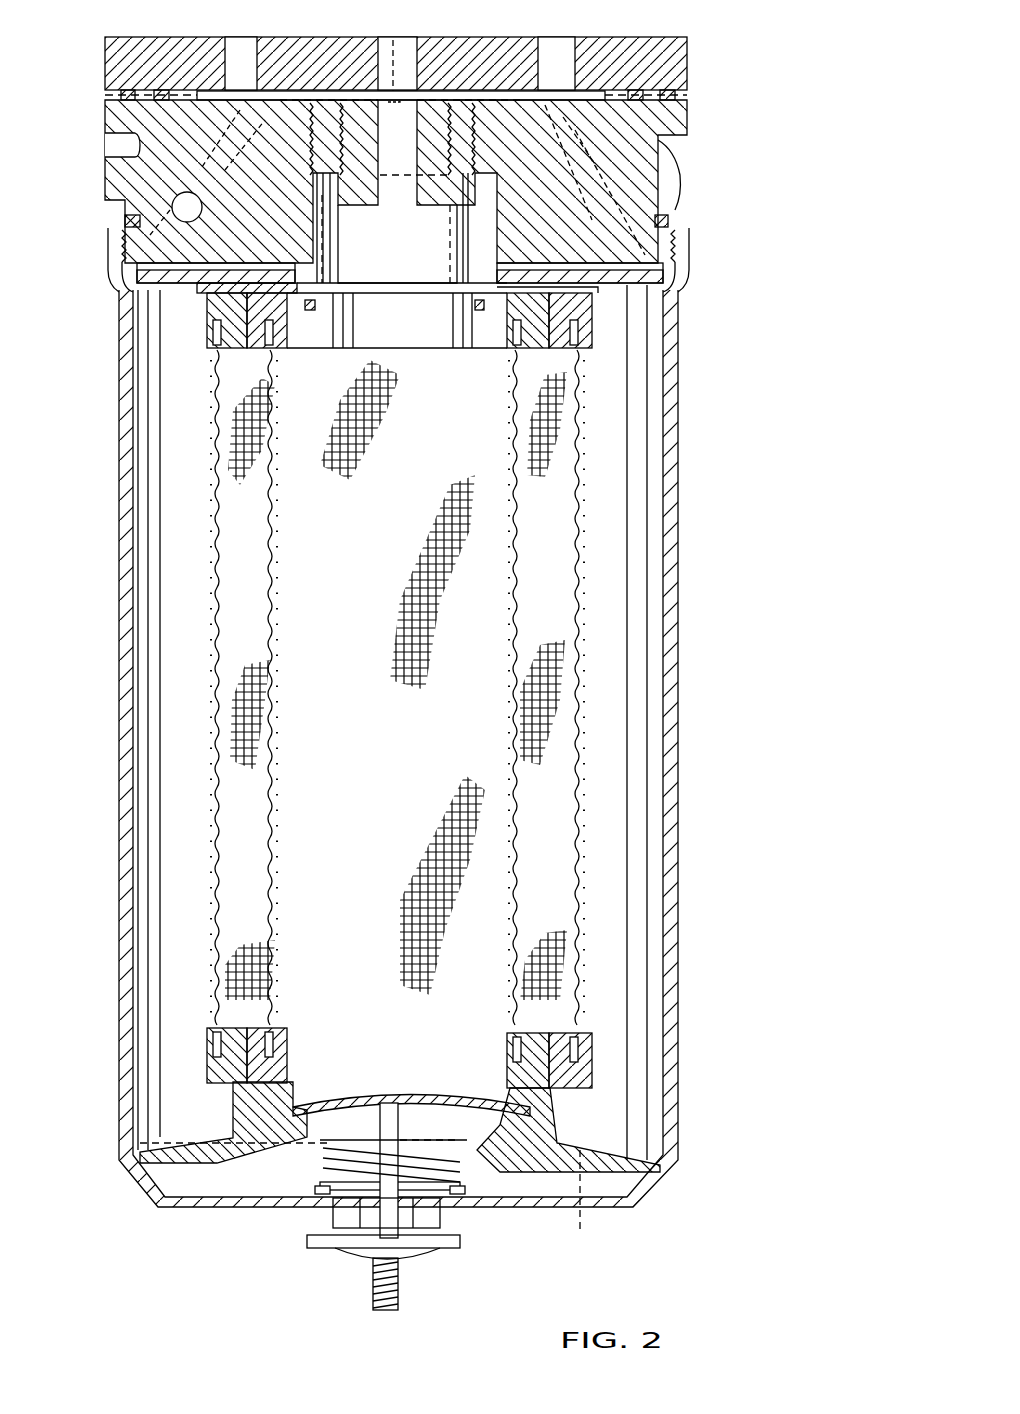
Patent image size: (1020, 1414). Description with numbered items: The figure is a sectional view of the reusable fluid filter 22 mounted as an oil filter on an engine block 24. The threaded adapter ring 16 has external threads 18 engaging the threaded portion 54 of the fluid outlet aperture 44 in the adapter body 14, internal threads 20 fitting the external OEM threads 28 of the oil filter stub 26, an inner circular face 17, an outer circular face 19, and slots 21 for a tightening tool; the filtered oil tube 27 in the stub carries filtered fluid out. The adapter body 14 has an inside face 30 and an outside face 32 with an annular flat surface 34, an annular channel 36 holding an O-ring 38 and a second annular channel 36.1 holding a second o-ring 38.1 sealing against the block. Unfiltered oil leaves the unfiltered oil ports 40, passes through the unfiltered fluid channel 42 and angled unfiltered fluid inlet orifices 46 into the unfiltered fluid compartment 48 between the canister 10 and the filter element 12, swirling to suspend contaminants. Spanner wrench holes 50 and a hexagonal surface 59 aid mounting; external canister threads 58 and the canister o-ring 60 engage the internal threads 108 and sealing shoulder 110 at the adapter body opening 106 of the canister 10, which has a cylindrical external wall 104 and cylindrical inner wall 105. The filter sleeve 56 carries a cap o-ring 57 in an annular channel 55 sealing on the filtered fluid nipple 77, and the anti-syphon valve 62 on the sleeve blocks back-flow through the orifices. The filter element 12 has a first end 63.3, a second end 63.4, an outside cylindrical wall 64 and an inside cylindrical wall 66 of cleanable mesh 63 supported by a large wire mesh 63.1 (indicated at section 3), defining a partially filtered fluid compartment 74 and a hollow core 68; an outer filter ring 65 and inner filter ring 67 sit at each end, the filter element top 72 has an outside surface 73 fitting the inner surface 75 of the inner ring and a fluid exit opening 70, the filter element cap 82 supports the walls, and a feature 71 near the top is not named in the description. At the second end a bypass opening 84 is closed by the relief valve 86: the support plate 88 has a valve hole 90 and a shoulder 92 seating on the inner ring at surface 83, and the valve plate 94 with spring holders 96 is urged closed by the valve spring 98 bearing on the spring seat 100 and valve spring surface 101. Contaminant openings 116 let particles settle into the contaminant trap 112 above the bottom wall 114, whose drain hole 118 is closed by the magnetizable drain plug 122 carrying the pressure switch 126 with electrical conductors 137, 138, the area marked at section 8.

The canister 10 is at (119, 655).
The reusable filter element 12 is at (268, 575).
The adapter body 14 is at (670, 112).
The threaded adapter ring 16 is at (340, 100).
The inner circular face 17 is at (290, 60).
The external threads 18 is at (310, 105).
The outer circular face 19 is at (455, 130).
The internal threads 20 is at (355, 100).
The slots 21 is at (397, 38).
The reusable fluid filter 22 is at (690, 410).
The engine block 24 is at (105, 78).
The oil filter stub 26 is at (445, 100).
The filtered oil tube 27 is at (415, 195).
The external OEM threads 28 is at (450, 208).
The inside face 30 is at (665, 272).
The outside face 32 is at (643, 95).
The annular flat surface 34 is at (660, 90).
The annular channel 36 is at (665, 130).
The second annular channel 36.1 is at (121, 95).
The O-ring 38 is at (660, 150).
The second o-ring 38.1 is at (158, 100).
The unfiltered oil ports 40 is at (228, 52).
The unfiltered fluid channel 42 is at (225, 52).
The fluid outlet aperture 44 is at (392, 265).
The unfiltered fluid inlet orifices 46 is at (175, 205).
The unfiltered fluid compartment 48 is at (175, 487).
The spanner wrench holes 50 is at (105, 150).
The threaded portion 54 is at (365, 133).
The annular channel 55 is at (332, 282).
The filter sleeve 56 is at (330, 335).
The cap o-ring 57 is at (205, 290).
The external canister threads 58 is at (108, 238).
The hexagonal surface 59 is at (520, 348).
The canister o-ring 60 is at (125, 220).
The anti-syphon valve 62 is at (150, 282).
The cleanable mesh 63 is at (245, 488).
The large wire mesh 63.1 is at (220, 735).
The first end 63.3 is at (460, 375).
The second end 63.4 is at (395, 1075).
The outside cylindrical wall 64 is at (217, 622).
The outer filter ring 65 is at (215, 318).
The inside cylindrical wall 66 is at (270, 640).
The inner filter ring 67 is at (575, 345).
The hollow core 68 is at (280, 690).
The fluid exit opening 70 is at (410, 350).
The seal 71 is at (600, 305).
The filter element top 72 is at (300, 345).
The outside surface 73 is at (595, 328).
The partially filtered fluid compartment 74 is at (235, 855).
The inner surface 75 is at (500, 348).
The filtered fluid nipple 77 is at (315, 305).
The filter element cap 82 is at (207, 312).
The surface 83 is at (245, 1100).
The bypass opening 84 is at (392, 1035).
The relief valve 86 is at (552, 1122).
The support plate 88 is at (200, 1140).
The valve hole 90 is at (560, 1130).
The shoulder 92 is at (505, 1105).
The valve plate 94 is at (345, 1095).
The spring holders 96 is at (320, 1208).
The valve spring 98 is at (462, 1170).
The spring seat 100 is at (455, 1195).
The valve spring surface 101 is at (495, 1150).
The cylindrical external wall 104 is at (680, 760).
The cylindrical inner wall 105 is at (660, 840).
The adapter body opening 106 is at (670, 250).
The internal threads 108 is at (670, 222).
The sealing shoulder 110 is at (130, 212).
The contaminant trap 112 is at (205, 1185).
The bottom wall 114 is at (215, 1208).
The contaminant openings 116 is at (602, 1201).
The drain hole 118 is at (320, 1192).
The drain plug 122 is at (398, 1215).
The pressure switch 126 is at (375, 1200).
The electrical conductor 137 is at (375, 1290).
The electrical conductor 138 is at (398, 1290).
The section line 3 is at (556, 470).
The section line 8 is at (388, 1140).